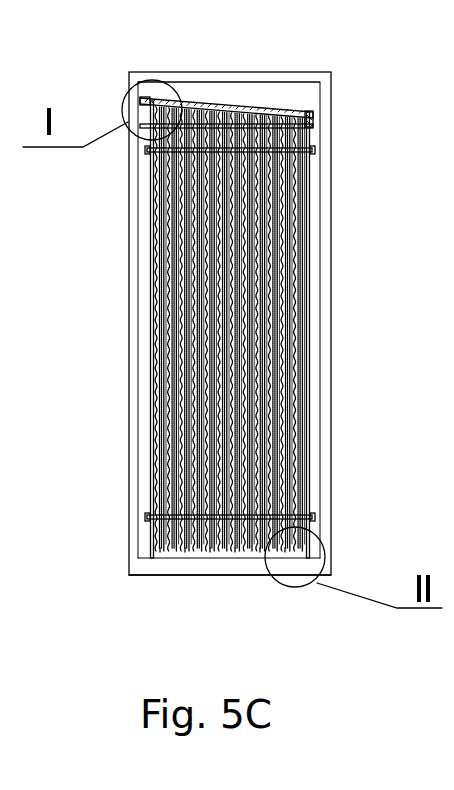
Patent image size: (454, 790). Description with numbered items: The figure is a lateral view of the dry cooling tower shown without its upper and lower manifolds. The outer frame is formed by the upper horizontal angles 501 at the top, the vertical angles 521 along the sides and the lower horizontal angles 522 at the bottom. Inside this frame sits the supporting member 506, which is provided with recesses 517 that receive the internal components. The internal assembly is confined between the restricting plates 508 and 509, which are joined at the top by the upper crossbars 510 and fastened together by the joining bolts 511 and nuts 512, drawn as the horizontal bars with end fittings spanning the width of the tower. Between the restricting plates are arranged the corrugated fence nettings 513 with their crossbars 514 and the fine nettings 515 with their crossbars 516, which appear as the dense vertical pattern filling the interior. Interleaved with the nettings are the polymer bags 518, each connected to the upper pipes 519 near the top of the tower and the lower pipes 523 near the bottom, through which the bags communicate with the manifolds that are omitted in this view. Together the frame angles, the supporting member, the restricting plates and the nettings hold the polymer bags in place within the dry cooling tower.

The upper horizontal angle 501 is at (290, 73).
The supporting member 506 is at (141, 99).
The restricting plate 508 is at (157, 340).
The restricting plate 509 is at (302, 361).
The upper crossbar 510 is at (150, 104).
The joining bolt 511 is at (192, 151).
The nut 512 is at (315, 150).
The corrugated fence netting 513 is at (283, 229).
The crossbar 514 is at (304, 112).
The fine netting 515 is at (303, 243).
The crossbar 516 is at (247, 103).
The recess 517 is at (217, 103).
The polymer bag 518 is at (296, 281).
The upper pipe 519 is at (152, 100).
The vertical angle 521 is at (329, 122).
The lower horizontal angle 522 is at (230, 574).
The lower pipe 523 is at (230, 547).